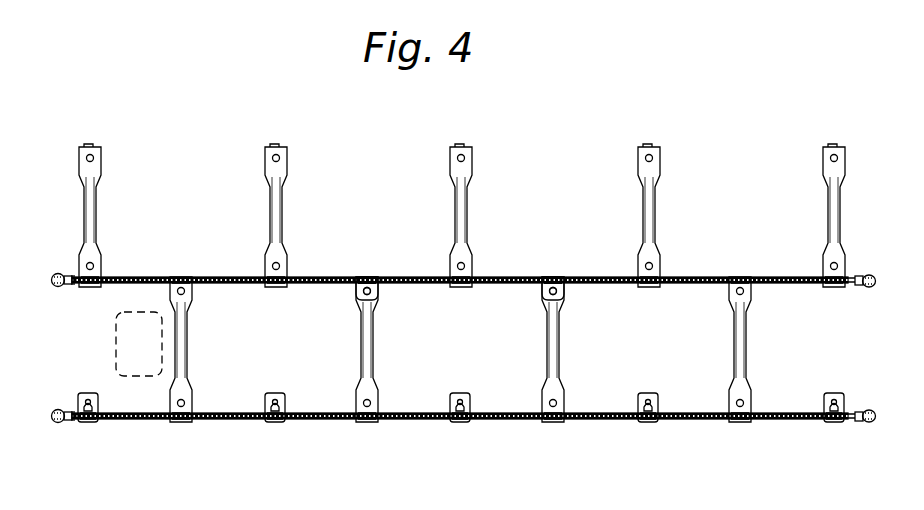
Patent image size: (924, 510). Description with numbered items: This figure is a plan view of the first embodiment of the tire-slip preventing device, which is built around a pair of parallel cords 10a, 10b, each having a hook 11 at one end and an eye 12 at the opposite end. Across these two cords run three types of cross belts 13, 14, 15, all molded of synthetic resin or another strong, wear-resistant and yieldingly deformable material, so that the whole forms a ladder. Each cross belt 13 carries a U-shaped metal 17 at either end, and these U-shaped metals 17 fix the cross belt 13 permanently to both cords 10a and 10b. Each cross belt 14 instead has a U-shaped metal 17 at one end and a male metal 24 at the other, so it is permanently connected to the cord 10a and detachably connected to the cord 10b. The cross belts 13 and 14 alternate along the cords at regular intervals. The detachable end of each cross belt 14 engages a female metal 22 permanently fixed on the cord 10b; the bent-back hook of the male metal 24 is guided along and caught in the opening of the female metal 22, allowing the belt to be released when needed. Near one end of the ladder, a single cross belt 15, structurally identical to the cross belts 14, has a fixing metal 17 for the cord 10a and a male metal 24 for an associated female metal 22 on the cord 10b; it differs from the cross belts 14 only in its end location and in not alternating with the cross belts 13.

The cord 10a is at (232, 277).
The cord 10b is at (233, 422).
The hook 11 is at (877, 283).
The eye 12 is at (58, 288).
The cross belt 13 is at (184, 349).
The cross belt 14 is at (278, 200).
The cross belt 15 is at (88, 198).
The U-shaped metal 17 is at (80, 277).
The female metal 22 is at (90, 423).
The male metal 24 is at (116, 134).